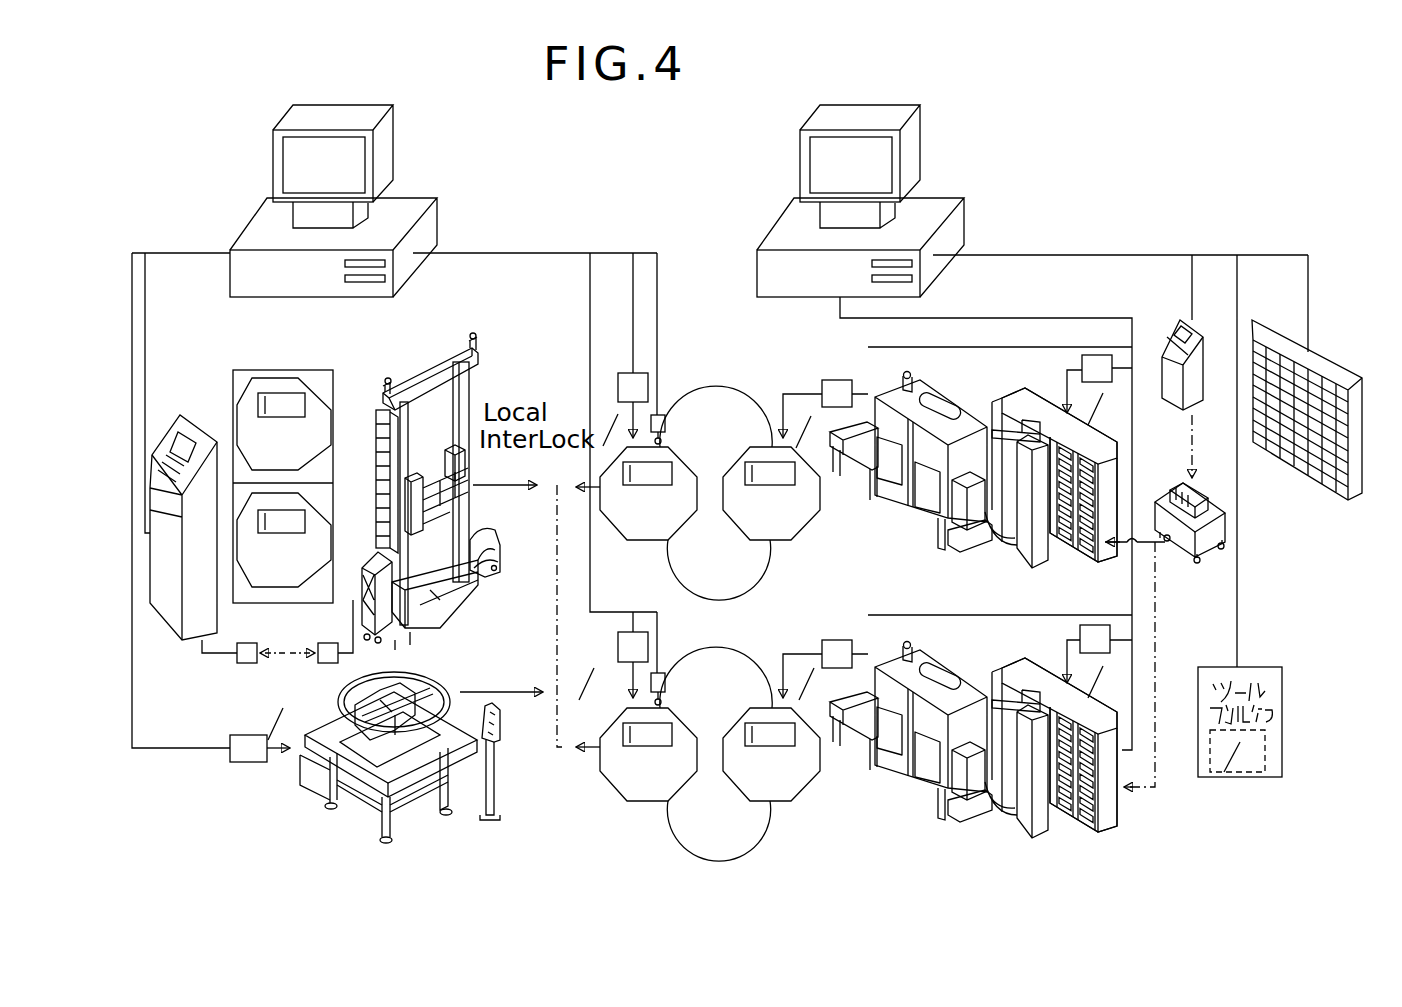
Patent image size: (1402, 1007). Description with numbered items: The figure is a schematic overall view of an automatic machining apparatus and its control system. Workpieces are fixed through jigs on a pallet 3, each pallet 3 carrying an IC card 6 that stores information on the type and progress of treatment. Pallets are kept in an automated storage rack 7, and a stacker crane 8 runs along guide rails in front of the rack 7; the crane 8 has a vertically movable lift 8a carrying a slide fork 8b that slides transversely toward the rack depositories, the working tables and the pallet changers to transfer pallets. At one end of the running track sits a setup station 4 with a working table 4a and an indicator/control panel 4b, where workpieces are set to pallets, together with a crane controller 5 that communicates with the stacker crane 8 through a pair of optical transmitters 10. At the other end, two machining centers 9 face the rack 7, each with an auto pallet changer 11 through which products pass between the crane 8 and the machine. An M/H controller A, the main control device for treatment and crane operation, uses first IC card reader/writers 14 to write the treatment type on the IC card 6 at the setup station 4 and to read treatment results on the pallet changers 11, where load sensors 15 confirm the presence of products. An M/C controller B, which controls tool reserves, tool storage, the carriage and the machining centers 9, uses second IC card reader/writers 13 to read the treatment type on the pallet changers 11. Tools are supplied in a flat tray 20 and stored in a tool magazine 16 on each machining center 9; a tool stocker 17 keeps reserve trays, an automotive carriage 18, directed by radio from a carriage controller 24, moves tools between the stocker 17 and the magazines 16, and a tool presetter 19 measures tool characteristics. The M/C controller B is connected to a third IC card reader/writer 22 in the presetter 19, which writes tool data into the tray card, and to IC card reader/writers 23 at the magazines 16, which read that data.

The pallet 3 is at (302, 385).
The setup station 4 is at (449, 819).
The working table 4a is at (446, 683).
The indicator/control panel 4b is at (508, 735).
The crane controller 5 is at (170, 613).
The IC card 6 is at (258, 407).
The rack 7 is at (245, 362).
The stacker crane 8 is at (480, 381).
The lift 8a is at (447, 523).
The slide fork 8b is at (443, 482).
The machining center 9 is at (908, 517).
The optical transmitters 10 is at (320, 643).
The auto pallet changer 11 is at (728, 387).
The second IC card reader/writer 13 is at (830, 378).
The first IC card reader/writer 14 is at (245, 737).
The load sensor 15 is at (665, 418).
The tool magazine 16 is at (1020, 392).
The tool stocker 17 is at (1323, 357).
The automotive carriage 18 is at (1208, 543).
The tool presetter 19 is at (1252, 667).
The tray 20 is at (1172, 494).
The third IC card reader/writer 22 is at (1200, 773).
The IC card reader/writer 23 is at (1082, 358).
The carriage controller 24 is at (1170, 336).
The M/H controller A is at (268, 128).
The M/C controller B is at (790, 145).